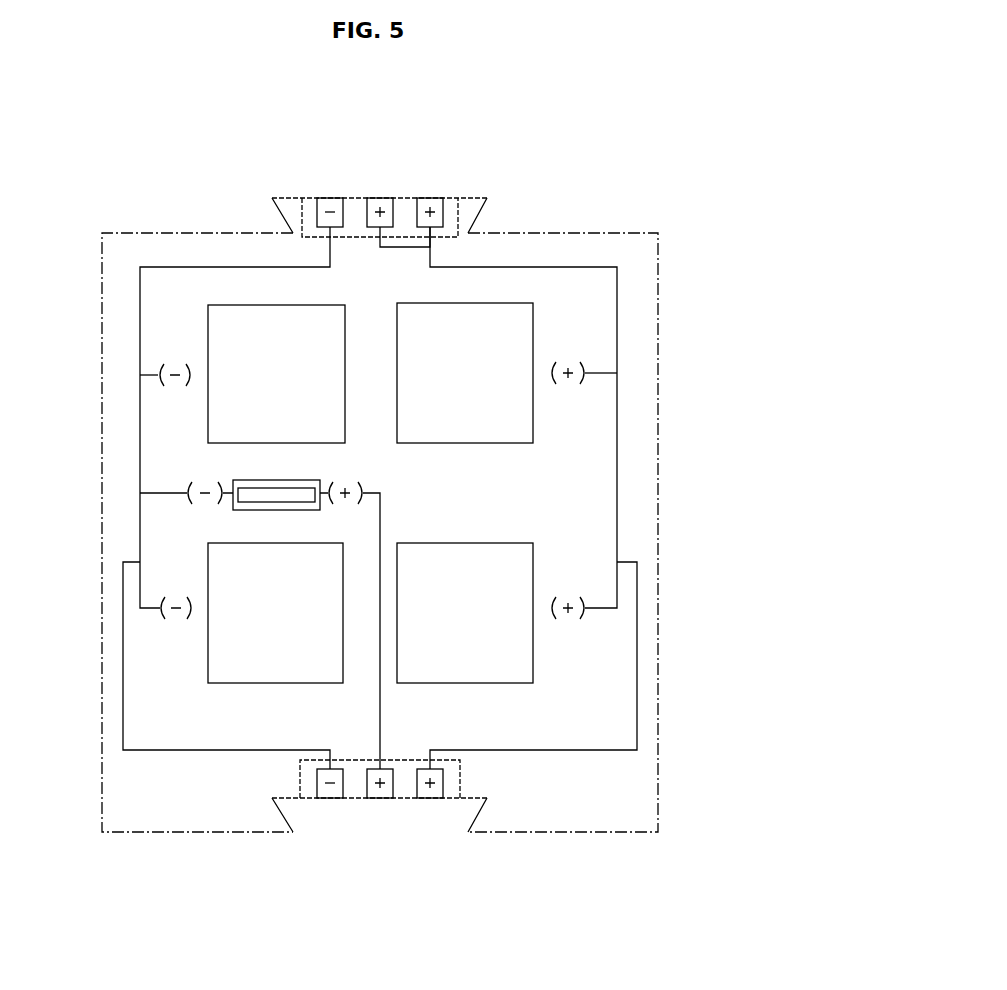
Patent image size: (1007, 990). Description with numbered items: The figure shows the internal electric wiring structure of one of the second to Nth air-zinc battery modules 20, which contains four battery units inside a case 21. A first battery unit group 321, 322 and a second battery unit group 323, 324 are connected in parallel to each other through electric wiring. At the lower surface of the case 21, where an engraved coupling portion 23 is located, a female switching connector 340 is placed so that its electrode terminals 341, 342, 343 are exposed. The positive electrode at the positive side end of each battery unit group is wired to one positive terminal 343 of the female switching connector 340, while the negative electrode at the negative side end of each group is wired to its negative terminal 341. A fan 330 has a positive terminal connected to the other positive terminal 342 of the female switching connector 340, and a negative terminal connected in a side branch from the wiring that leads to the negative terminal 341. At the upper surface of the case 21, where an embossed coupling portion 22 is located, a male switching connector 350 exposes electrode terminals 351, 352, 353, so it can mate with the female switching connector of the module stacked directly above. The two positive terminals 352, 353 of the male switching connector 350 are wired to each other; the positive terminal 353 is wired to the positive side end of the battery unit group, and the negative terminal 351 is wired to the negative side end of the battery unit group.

The battery module 20 is at (680, 112).
The case 21 is at (138, 233).
The embossed coupling portion 22 is at (468, 198).
The engraved coupling portion 23 is at (388, 815).
The first battery unit group 321 is at (515, 332).
The first battery unit group 322 is at (222, 332).
The second battery unit group 323 is at (272, 658).
The second battery unit group 324 is at (475, 658).
The fan 330 is at (277, 494).
The female switching connector 340 is at (462, 780).
The negative terminal 341 is at (327, 798).
The positive terminal 342 is at (370, 800).
The positive terminal 343 is at (423, 800).
The male switching connector 350 is at (315, 238).
The negative terminal 351 is at (322, 198).
The positive terminal 352 is at (373, 198).
The positive terminal 353 is at (423, 198).